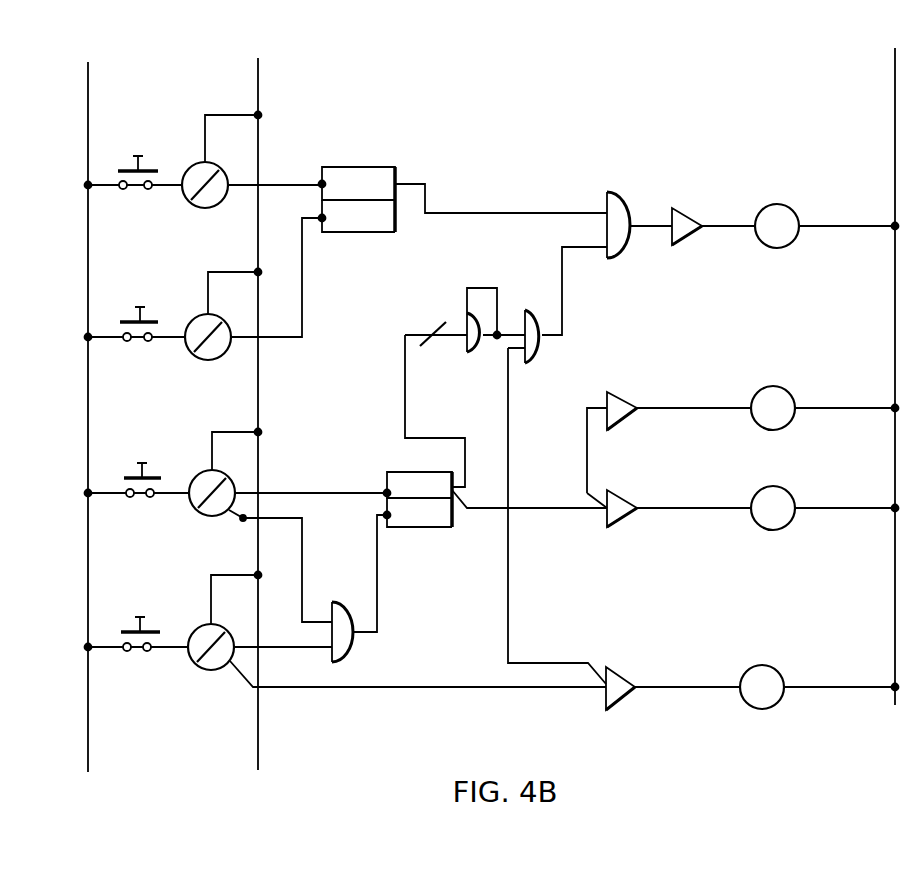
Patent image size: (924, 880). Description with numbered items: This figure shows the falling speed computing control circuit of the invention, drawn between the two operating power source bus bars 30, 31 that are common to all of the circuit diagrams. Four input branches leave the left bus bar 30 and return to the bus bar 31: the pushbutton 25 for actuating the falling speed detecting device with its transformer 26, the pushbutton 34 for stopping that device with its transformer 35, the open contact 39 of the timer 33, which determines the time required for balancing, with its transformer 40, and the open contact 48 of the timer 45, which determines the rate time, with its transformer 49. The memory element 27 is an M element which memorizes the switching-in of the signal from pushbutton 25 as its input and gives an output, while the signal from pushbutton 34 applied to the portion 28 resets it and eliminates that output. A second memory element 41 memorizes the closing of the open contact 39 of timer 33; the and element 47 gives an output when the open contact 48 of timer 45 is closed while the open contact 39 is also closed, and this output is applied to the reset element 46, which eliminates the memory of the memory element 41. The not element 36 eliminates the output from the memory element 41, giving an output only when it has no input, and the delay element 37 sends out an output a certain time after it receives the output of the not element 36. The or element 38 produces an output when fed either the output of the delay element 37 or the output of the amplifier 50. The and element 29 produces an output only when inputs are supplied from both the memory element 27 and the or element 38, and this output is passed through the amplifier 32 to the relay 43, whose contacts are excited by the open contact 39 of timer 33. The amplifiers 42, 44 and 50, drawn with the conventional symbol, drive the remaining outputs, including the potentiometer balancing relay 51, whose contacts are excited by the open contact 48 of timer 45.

The pushbutton 25 is at (145, 165).
The transformer 26 is at (205, 200).
The memory element 27 is at (357, 170).
The reset portion of memory element 28 is at (347, 222).
The and element 29 is at (615, 200).
The operating power source bus bar 30 is at (88, 78).
The operating power source bus bar 31 is at (572, 397).
The amplifier 32 is at (680, 215).
The timer 33 is at (825, 226).
The pushbutton 34 is at (145, 310).
The transformer 35 is at (205, 352).
The not element 36 is at (437, 318).
The delay element 37 is at (463, 305).
The or element 38 is at (535, 340).
The open contact of timer 39 is at (148, 470).
The transformer 40 is at (205, 507).
The memory element 41 is at (408, 483).
The amplifier 42 is at (612, 405).
The relay 43 is at (823, 408).
The amplifier 44 is at (615, 500).
The timer 45 is at (823, 508).
The reset element 46 is at (425, 517).
The and element 47 is at (343, 640).
The open contact of timer 48 is at (150, 625).
The transformer 49 is at (207, 660).
The amplifier 50 is at (620, 680).
The potentiometer balancing relay 51 is at (817, 687).